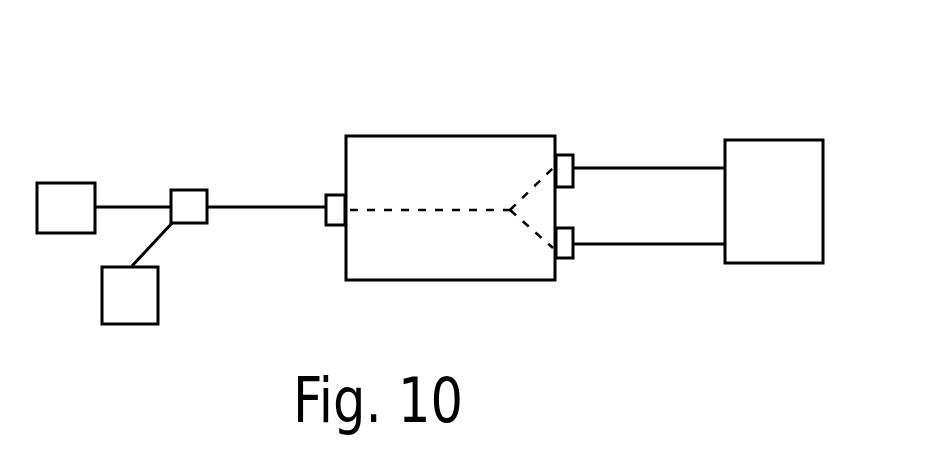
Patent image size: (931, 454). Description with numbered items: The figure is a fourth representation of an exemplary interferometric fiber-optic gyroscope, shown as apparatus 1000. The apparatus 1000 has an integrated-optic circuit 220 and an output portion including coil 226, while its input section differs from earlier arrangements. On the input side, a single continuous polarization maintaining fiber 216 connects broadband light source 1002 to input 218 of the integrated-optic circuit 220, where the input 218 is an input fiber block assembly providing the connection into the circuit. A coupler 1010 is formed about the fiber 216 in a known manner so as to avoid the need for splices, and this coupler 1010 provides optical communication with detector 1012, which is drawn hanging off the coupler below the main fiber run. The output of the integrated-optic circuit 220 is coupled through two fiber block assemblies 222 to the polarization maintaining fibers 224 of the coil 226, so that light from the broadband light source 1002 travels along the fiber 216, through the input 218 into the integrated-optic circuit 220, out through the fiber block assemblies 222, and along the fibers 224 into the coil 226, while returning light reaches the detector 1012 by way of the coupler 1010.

The apparatus 1000 is at (233, 32).
The broadband light source 1002 is at (63, 182).
The coupler 1010 is at (197, 189).
The detector 1012 is at (128, 325).
The polarization maintaining fiber 216 is at (267, 209).
The input fiber block assembly 218 is at (328, 193).
The integrated-optic circuit 220 is at (428, 136).
The fiber block assemblies 222 is at (570, 155).
The polarization maintaining fibers 224 is at (644, 167).
The coil 226 is at (752, 140).